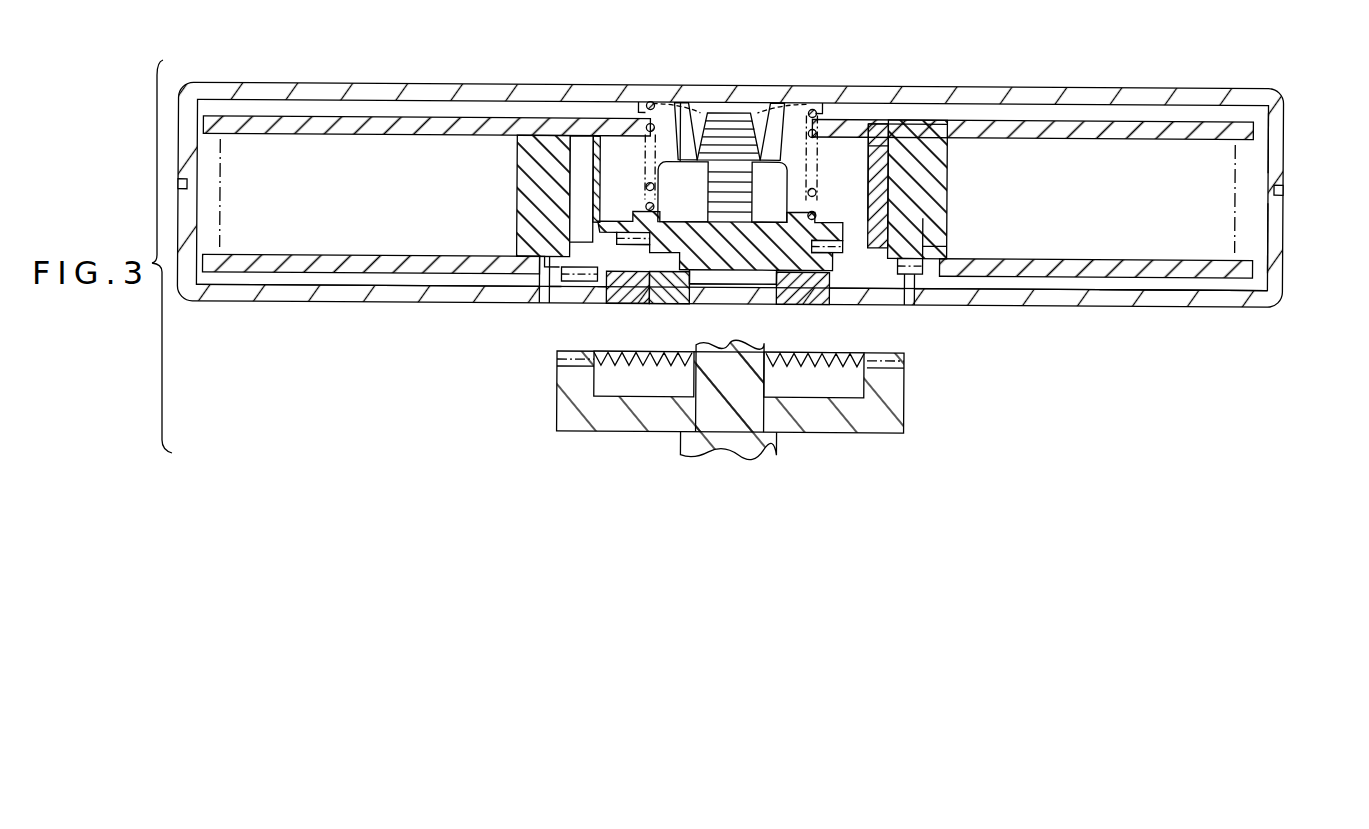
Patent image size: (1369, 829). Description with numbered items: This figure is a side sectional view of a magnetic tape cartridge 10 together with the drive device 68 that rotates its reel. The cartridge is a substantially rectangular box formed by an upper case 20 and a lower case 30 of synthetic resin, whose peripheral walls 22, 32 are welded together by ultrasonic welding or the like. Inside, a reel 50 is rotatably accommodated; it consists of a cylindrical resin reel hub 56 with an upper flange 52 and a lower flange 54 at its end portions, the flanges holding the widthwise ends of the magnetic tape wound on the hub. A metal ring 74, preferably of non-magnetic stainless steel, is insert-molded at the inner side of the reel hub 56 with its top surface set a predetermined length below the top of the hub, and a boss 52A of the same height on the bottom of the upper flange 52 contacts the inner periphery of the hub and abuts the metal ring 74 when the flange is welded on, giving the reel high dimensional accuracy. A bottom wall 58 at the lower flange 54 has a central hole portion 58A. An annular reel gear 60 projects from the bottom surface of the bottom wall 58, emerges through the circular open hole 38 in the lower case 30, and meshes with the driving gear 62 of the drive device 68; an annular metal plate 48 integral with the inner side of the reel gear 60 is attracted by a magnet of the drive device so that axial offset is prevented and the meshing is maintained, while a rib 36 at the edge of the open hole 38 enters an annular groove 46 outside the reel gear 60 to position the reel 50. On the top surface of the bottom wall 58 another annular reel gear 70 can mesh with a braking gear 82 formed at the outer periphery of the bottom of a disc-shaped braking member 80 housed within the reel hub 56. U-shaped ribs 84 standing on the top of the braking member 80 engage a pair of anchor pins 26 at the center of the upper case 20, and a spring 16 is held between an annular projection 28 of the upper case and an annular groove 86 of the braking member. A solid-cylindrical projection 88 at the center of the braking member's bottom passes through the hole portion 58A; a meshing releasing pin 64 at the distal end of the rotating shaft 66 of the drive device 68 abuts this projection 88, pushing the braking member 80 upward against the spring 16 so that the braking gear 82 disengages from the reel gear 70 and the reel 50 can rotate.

The magnetic tape cartridge 10 is at (1302, 69).
The spring 16 is at (838, 165).
The upper case 20 is at (1290, 108).
The peripheral wall 22 is at (1278, 143).
The anchor pins 26 is at (690, 117).
The annular projection 28 is at (818, 110).
The lower case 30 is at (1293, 281).
The peripheral wall 32 is at (1277, 229).
The rib 36 is at (926, 285).
The open hole 38 is at (918, 276).
The annular groove 46 is at (925, 250).
The metal plate 48 is at (780, 268).
The reel 50 is at (1230, 182).
The upper flange 52 is at (1118, 124).
The boss 52A is at (592, 142).
The lower flange 54 is at (1105, 262).
The reel hub 56 is at (938, 182).
The bottom wall 58 is at (665, 303).
The hole portion 58A is at (700, 280).
The reel gear 60 is at (890, 292).
The driving gear 62 is at (906, 360).
The meshing releasing pin 64 is at (760, 368).
The rotating shaft 66 is at (738, 450).
The drive device 68 is at (994, 412).
The reel gear 70 is at (566, 235).
The metal ring 74 is at (872, 152).
The braking member 80 is at (572, 192).
The braking gear 82 is at (890, 232).
The U-shaped ribs 84 is at (640, 155).
The annular groove 86 is at (568, 178).
The projection 88 is at (745, 262).